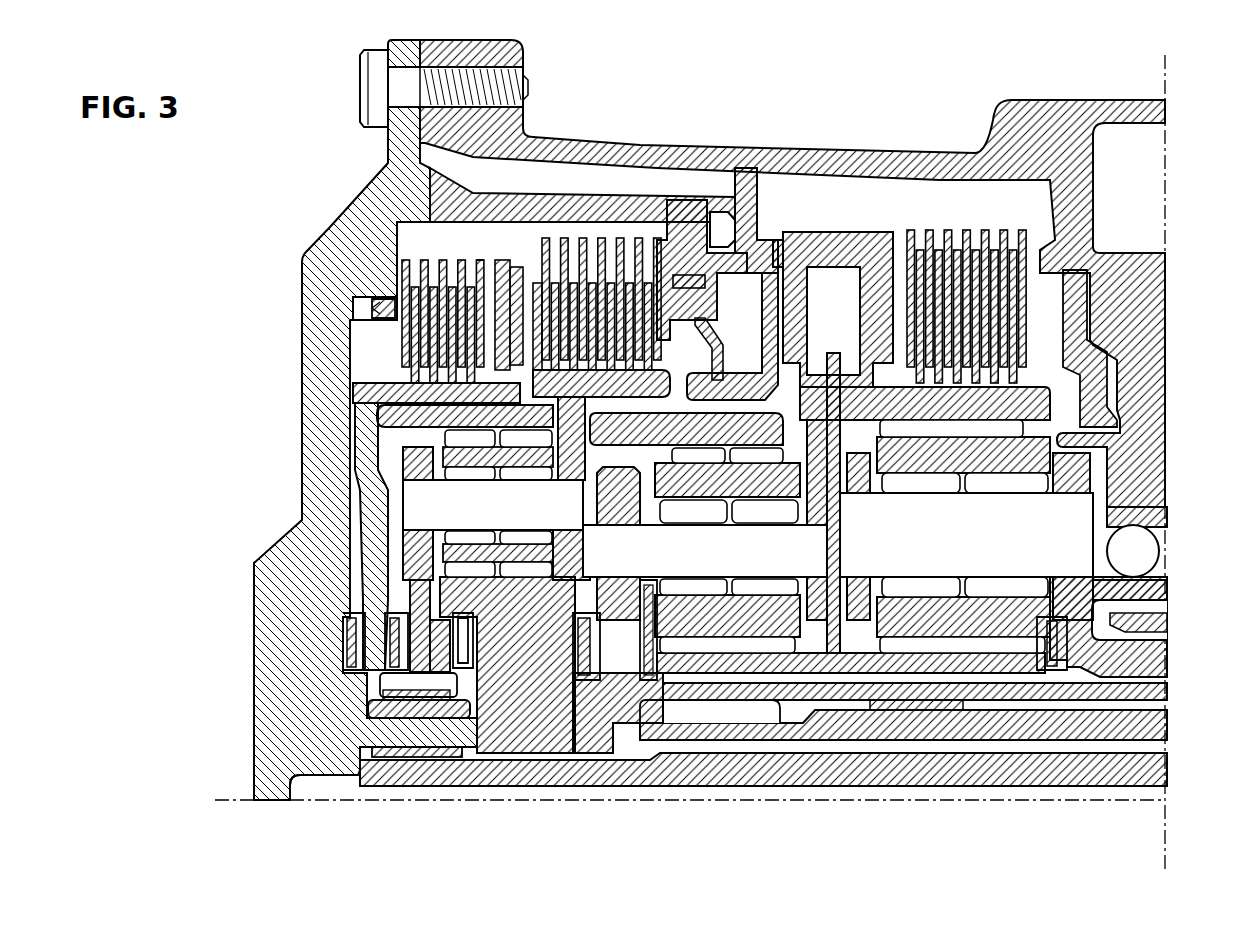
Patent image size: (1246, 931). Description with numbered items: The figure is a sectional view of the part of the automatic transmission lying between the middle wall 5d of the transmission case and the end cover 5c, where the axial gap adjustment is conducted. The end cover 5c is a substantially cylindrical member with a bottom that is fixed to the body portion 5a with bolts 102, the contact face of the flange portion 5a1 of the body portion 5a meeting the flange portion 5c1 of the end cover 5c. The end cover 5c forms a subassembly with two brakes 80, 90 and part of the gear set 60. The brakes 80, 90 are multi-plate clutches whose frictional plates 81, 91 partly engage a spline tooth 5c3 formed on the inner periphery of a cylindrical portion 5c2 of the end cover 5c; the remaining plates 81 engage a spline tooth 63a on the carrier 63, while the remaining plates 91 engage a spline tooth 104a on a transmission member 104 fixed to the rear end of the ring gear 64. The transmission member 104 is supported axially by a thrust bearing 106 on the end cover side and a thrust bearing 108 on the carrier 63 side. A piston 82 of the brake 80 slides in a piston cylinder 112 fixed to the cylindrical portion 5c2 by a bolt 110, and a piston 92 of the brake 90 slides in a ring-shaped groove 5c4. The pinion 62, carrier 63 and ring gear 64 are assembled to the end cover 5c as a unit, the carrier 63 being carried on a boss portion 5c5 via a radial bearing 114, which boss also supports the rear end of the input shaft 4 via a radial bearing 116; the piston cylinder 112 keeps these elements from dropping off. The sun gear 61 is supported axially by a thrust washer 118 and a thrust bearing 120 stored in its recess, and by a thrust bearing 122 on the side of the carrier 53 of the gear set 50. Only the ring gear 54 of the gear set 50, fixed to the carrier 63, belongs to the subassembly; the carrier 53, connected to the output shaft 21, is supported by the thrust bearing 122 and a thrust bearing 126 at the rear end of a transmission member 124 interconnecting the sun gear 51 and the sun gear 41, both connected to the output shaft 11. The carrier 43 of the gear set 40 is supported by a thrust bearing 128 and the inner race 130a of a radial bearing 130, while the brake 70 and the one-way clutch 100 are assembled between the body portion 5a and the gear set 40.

The input shaft 4 is at (978, 780).
The body portion 5a is at (632, 148).
The flange portion 5a1 is at (490, 50).
The end cover 5c is at (313, 731).
The flange portion 5c1 is at (407, 52).
The cylindrical portion 5c2 is at (527, 207).
The spline tooth 5c3 is at (415, 240).
The ring-shaped groove 5c4 is at (335, 320).
The boss portion 5c5 is at (360, 748).
The middle wall 5d is at (1153, 474).
The output shaft 11 is at (1167, 690).
The output shaft 21 is at (1157, 728).
The first gear set 40 is at (977, 543).
The sun gear 41 is at (973, 623).
The carrier 43 is at (1027, 414).
The second gear set 50 is at (737, 560).
The sun gear 51 is at (739, 623).
The carrier 53 is at (620, 458).
The ring gear 54 is at (768, 420).
The third gear set 60 is at (512, 514).
The sun gear 61 is at (534, 653).
The pinion 62 is at (533, 553).
The carrier 63 is at (417, 557).
The spline tooth 63a is at (667, 373).
The ring gear 64 is at (467, 420).
The first brake 70 is at (933, 223).
The brake 80 is at (597, 228).
The frictional plates 81 is at (623, 236).
The piston 82 is at (727, 340).
The brake 90 is at (468, 245).
The frictional plates 91 is at (482, 258).
The piston 92 is at (370, 305).
The one-way clutch 100 is at (852, 320).
The bolt 102 is at (358, 92).
The transmission member 104 is at (377, 483).
The spline tooth 104a is at (383, 385).
The thrust bearing 106 is at (350, 645).
The thrust bearing 108 is at (396, 637).
The bolt 110 is at (735, 230).
The piston cylinder 112 is at (763, 304).
The radial bearing 114 is at (370, 710).
The radial bearing 116 is at (413, 760).
The thrust washer 118 is at (440, 655).
The thrust bearing 120 is at (463, 647).
The thrust bearing 122 is at (583, 640).
The transmission member 124 is at (840, 672).
The thrust bearing 126 is at (653, 645).
The thrust bearing 128 is at (1052, 650).
The radial bearing 130 is at (1147, 550).
The inner race 130a is at (1153, 593).